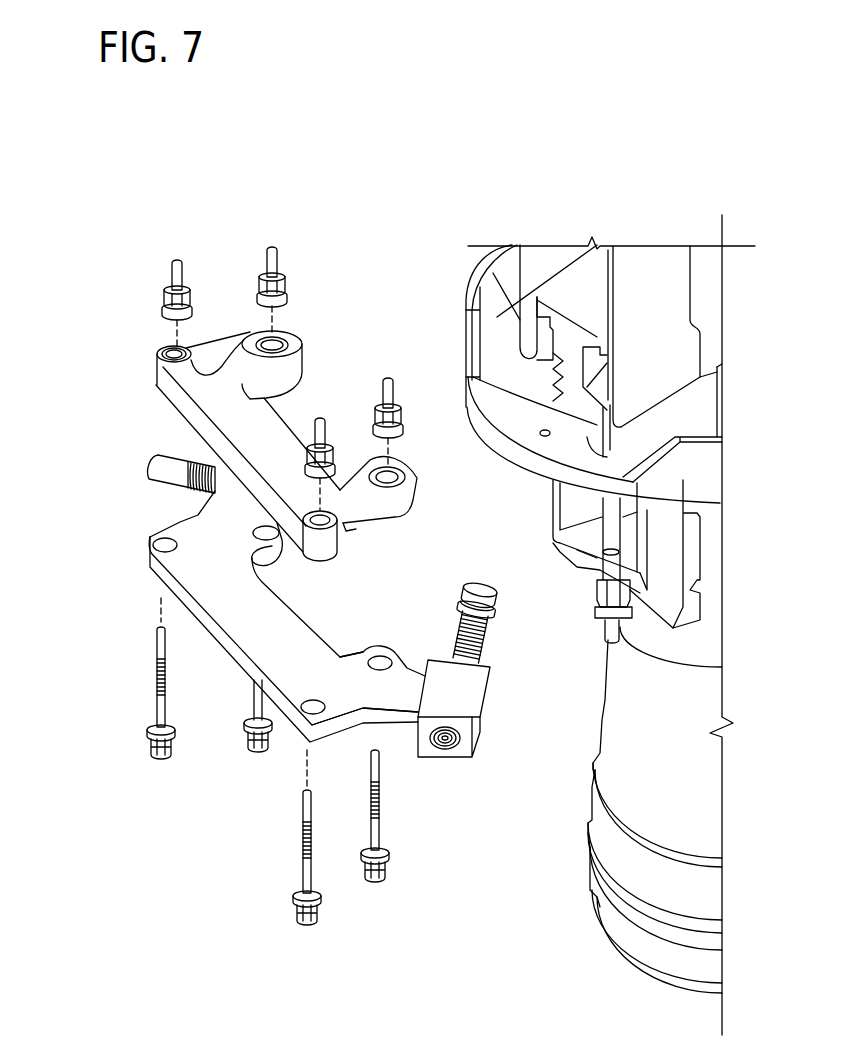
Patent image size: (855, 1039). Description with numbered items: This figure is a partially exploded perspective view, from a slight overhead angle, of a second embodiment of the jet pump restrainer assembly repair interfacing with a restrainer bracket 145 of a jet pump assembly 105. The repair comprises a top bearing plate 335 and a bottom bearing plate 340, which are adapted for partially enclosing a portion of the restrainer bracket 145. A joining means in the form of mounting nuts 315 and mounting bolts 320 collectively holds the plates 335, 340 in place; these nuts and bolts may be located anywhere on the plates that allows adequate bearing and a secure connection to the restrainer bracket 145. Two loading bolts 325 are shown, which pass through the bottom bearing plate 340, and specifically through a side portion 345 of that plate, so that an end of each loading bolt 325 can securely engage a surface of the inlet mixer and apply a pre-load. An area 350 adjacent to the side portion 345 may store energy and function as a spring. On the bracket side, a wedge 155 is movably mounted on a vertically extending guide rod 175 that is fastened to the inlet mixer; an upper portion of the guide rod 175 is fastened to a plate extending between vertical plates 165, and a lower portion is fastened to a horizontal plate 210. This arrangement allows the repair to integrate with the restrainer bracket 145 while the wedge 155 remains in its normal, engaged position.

The jet pump assembly 105 is at (603, 913).
The restrainer bracket 145 is at (467, 322).
The wedge 155 is at (550, 298).
The vertical plates 165 is at (648, 262).
The guide rod 175 is at (600, 617).
The horizontal plate 210 is at (667, 613).
The mounting nuts 315 is at (270, 248).
The mounting bolts 320 is at (253, 755).
The loading bolts 325 is at (147, 464).
The top bearing plate 335 is at (282, 439).
The bottom bearing plate 340 is at (273, 618).
The side portion 345 is at (478, 708).
The area 350 is at (412, 703).